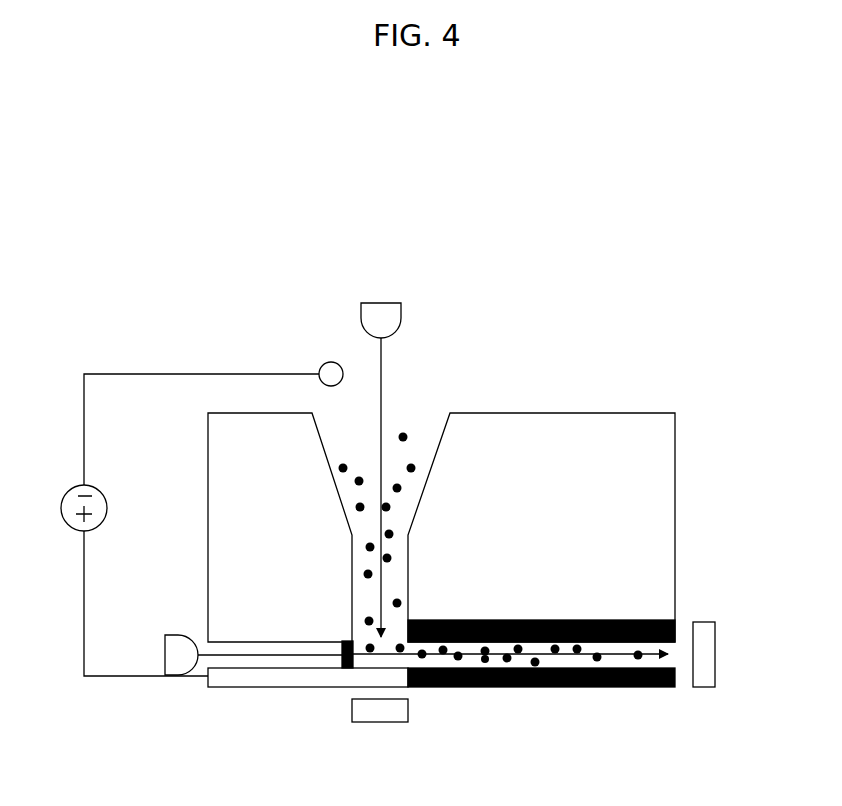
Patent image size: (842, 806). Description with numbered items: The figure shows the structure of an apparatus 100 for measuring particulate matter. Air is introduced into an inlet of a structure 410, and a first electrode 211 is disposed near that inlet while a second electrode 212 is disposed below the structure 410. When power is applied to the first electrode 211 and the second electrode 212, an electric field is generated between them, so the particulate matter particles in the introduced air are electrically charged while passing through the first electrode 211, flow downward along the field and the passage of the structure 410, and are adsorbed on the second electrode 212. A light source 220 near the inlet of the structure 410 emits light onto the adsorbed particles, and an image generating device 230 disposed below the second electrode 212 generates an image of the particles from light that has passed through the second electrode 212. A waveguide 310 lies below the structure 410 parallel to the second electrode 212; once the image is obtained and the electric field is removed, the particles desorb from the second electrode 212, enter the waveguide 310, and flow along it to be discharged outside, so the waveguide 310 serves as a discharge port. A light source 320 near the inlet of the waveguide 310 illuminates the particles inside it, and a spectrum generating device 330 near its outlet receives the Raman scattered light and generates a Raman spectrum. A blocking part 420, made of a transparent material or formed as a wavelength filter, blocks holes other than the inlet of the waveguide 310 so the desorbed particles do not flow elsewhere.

The apparatus for measuring particulate matter 100 is at (533, 282).
The first electrode 211 is at (322, 365).
The second electrode 212 is at (270, 688).
The light source 220 is at (388, 303).
The image generating device 230 is at (392, 723).
The waveguide 310 is at (585, 688).
The light source 320 is at (167, 634).
The spectrum generating device 330 is at (714, 622).
The structure 410 is at (279, 413).
The blocking part 420 is at (347, 670).